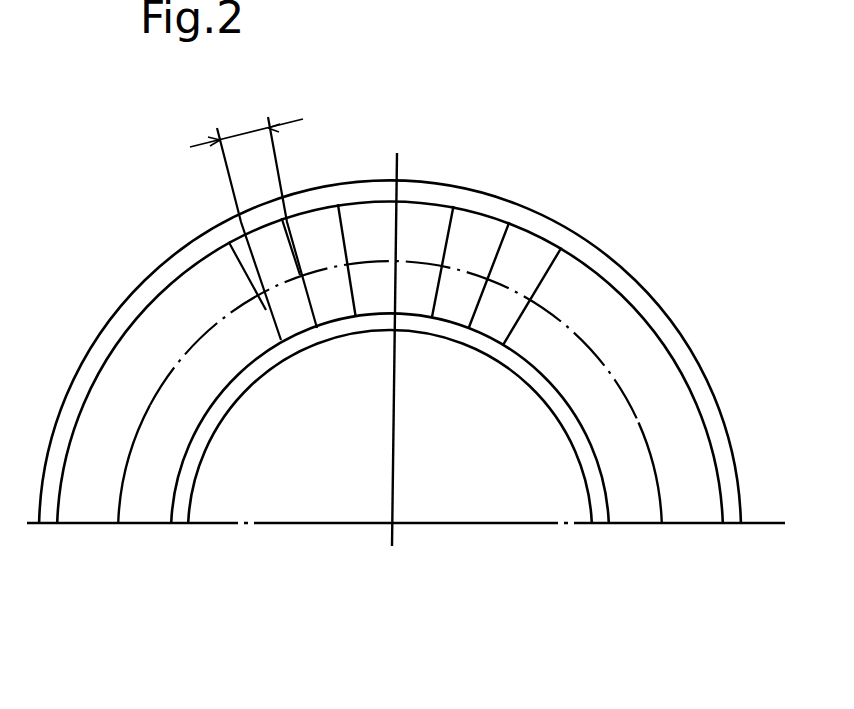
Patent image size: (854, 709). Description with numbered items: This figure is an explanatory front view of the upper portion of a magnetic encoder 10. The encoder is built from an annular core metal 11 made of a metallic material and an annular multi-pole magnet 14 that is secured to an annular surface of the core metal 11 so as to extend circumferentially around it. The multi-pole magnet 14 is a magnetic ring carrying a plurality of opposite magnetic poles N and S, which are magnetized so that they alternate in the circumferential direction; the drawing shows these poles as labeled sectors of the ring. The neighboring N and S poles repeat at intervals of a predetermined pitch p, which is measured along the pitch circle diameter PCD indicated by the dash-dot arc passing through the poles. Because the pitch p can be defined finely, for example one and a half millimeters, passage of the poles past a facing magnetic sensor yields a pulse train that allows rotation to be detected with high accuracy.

The magnetic encoder 10 is at (567, 220).
The multi-pole magnet 14 is at (480, 223).
The core metal 11 is at (217, 428).
The pitch circle diameter PCD is at (171, 376).
The pitch p is at (253, 217).